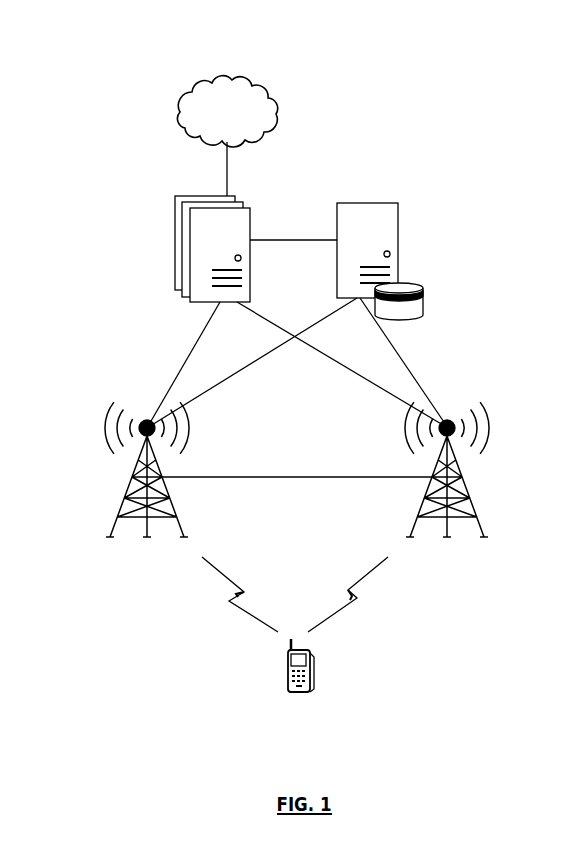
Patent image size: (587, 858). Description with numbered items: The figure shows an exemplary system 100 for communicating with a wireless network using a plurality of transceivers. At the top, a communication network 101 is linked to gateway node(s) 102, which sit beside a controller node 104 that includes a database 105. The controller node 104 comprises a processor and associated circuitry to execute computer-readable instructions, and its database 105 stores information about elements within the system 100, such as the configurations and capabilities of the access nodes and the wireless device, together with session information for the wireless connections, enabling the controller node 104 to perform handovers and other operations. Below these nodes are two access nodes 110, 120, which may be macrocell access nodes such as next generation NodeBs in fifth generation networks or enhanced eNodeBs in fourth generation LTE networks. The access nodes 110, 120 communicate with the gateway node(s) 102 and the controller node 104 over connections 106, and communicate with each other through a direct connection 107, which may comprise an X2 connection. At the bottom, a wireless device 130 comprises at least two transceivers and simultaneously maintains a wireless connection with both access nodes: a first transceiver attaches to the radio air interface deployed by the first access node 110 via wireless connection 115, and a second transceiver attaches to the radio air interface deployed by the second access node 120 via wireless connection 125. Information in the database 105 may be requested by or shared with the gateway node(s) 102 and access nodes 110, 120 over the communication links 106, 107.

The system 100 is at (413, 58).
The communication network 101 is at (211, 122).
The gateway node 102 is at (193, 196).
The controller node 104 is at (398, 203).
The database 105 is at (423, 288).
The connections 106 is at (195, 343).
The direct connection 107 is at (322, 476).
The first access node 110 is at (122, 517).
The second access node 120 is at (470, 510).
The wireless connection 115 is at (232, 602).
The wireless connection 125 is at (358, 598).
The wireless device 130 is at (285, 683).